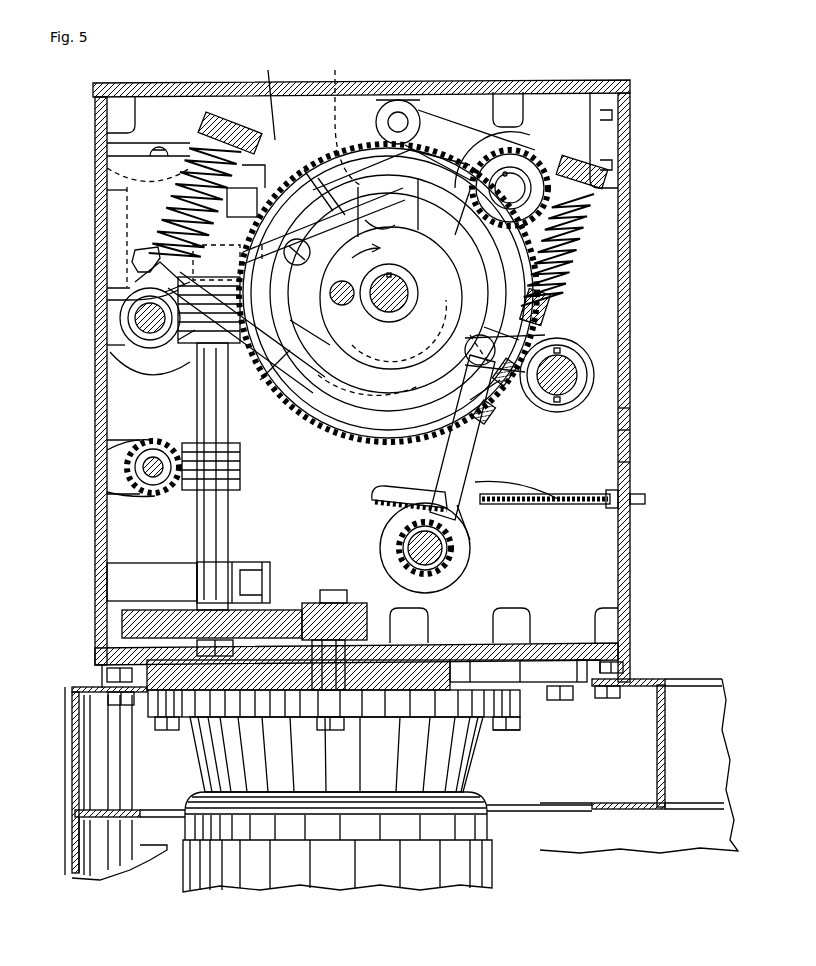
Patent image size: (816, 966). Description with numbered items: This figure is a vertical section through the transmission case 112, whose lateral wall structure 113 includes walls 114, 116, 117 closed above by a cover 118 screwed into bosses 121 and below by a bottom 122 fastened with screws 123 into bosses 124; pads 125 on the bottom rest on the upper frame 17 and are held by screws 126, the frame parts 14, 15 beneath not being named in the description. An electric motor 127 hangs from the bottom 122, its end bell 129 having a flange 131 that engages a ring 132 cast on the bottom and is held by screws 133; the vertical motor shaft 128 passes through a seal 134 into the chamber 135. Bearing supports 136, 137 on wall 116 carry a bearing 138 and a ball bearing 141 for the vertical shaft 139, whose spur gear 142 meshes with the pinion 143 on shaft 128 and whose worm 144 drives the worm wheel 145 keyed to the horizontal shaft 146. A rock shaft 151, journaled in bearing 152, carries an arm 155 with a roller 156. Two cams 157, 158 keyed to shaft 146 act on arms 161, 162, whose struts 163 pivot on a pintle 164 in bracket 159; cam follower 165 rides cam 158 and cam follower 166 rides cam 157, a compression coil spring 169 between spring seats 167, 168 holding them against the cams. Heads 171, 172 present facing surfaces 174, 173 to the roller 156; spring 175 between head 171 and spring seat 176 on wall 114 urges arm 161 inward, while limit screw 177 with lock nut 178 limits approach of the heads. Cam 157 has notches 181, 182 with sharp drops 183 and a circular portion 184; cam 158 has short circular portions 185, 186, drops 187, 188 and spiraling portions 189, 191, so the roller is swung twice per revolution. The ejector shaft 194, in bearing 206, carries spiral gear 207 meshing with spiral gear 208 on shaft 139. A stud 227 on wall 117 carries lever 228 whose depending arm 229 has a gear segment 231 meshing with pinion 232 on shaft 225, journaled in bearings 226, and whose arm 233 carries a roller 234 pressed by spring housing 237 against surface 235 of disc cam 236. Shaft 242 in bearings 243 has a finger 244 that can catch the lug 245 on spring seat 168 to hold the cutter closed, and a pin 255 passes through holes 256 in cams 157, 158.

The frame member 14 is at (76, 860).
The frame wall 15 is at (70, 770).
The upper frame 17 is at (75, 812).
The case 112 is at (630, 548).
The lateral wall structure 113 is at (630, 438).
The wall 114 is at (630, 462).
The wall 116 is at (100, 412).
The wall 117 is at (618, 492).
The cover 118 is at (570, 82).
The bosses 121 is at (510, 110).
The bottom 122 is at (556, 640).
The screws 123 is at (625, 655).
The bosses 124 is at (608, 626).
The pads 125 is at (107, 672).
The screws 126 is at (108, 698).
The electric motor 127 is at (428, 870).
The shaft 128 is at (340, 717).
The end bell 129 is at (440, 765).
The flange 131 is at (520, 717).
The ring 132 is at (520, 698).
The screws 133 is at (512, 730).
The seal 134 is at (400, 640).
The chamber 135 is at (595, 428).
The bearing support 136 is at (125, 583).
The bearing support 137 is at (120, 166).
The bearing 138 is at (262, 576).
The shaft 139 is at (197, 540).
The ball bearing 141 is at (120, 140).
The spur gear 142 is at (122, 620).
The pinion 143 is at (337, 590).
The worm 144 is at (175, 340).
The worm wheel 145 is at (275, 360).
The shaft 146 is at (398, 287).
The rock shaft 151 is at (565, 372).
The bearing 152 is at (520, 350).
The arm 155 is at (495, 344).
The roller 156 is at (587, 358).
The cam 157 is at (275, 208).
The cam 158 is at (352, 380).
The bracket 159 is at (135, 230).
The arm 161 is at (269, 94).
The arm 162 is at (300, 400).
The struts 163 is at (320, 120).
The pintle 164 is at (290, 235).
The cam follower 165 is at (410, 215).
The cam follower 166 is at (375, 440).
The spring seat 167 is at (230, 125).
The spring seat 168 is at (135, 258).
The compression coil spring 169 is at (200, 218).
The head 171 is at (550, 300).
The head 172 is at (470, 400).
The surface 173 is at (510, 385).
The surface 174 is at (541, 324).
The compression coil spring 175 is at (580, 225).
The spring seat 176 is at (605, 178).
The limit screw 177 is at (492, 420).
The lock nut 178 is at (505, 395).
The notch 181 is at (358, 212).
The notch 182 is at (391, 298).
The sharp drops 183 is at (352, 314).
The circular portion 184 is at (578, 268).
The circular portion 185 is at (405, 205).
The circular portion 186 is at (398, 438).
The sharp drop 187 is at (377, 211).
The sharp drop 188 is at (425, 345).
The spiraling portion 189 is at (295, 258).
The spiraling portion 191 is at (432, 292).
The shaft 194 is at (125, 485).
The bearing 206 is at (130, 470).
The spiral gear 207 is at (125, 497).
The spiral gear 208 is at (240, 470).
The shaft 225 is at (410, 540).
The bearings 226 is at (470, 553).
The stud 227 is at (520, 180).
The lever 228 is at (535, 140).
The depending arm 229 is at (470, 500).
The gear segment 231 is at (372, 495).
The pinion 232 is at (450, 560).
The arm 233 is at (470, 150).
The roller 234 is at (395, 100).
The surface 235 is at (341, 117).
The disc cam 236 is at (490, 125).
The spring housing 237 is at (209, 294).
The shaft 242 is at (130, 325).
The bearings 243 is at (125, 355).
The finger 244 is at (160, 282).
The lug 245 is at (140, 278).
The pin 255 is at (296, 265).
The holes 256 is at (322, 392).